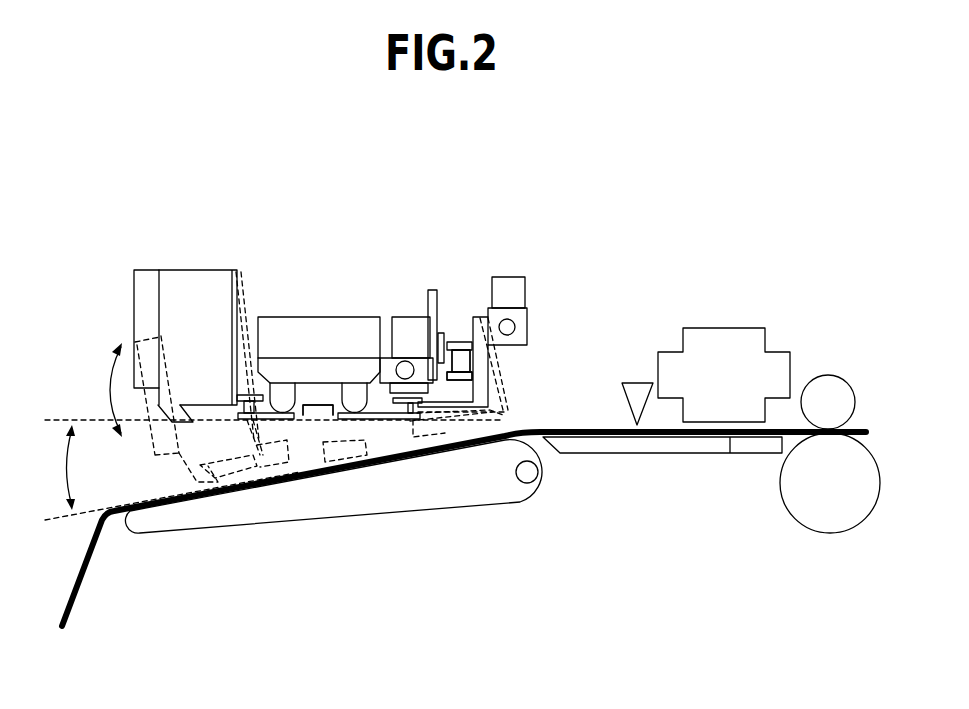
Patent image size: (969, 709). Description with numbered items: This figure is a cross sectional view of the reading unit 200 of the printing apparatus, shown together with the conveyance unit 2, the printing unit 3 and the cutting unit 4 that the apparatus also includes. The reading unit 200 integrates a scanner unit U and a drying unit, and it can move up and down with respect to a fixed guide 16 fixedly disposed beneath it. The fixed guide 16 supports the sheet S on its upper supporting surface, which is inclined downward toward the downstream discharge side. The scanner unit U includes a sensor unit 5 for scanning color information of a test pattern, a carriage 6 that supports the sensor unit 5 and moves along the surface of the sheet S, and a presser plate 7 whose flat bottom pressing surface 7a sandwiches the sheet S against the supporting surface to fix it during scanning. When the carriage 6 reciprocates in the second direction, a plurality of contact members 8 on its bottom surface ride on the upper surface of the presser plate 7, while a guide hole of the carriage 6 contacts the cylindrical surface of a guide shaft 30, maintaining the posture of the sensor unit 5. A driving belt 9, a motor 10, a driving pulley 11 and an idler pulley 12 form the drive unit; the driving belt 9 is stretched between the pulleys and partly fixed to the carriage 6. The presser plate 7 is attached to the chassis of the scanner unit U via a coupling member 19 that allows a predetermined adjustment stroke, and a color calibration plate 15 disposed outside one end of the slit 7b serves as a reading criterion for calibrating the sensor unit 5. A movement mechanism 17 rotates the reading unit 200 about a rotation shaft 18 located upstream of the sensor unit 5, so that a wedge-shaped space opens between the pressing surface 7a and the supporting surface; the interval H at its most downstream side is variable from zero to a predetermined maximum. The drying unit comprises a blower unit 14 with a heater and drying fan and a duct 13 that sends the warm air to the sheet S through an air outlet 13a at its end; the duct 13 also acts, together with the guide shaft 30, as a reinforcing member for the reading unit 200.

The reading unit 200 is at (115, 241).
The conveyance unit 2 is at (829, 383).
The printing unit 3 is at (724, 338).
The cutting unit 4 is at (638, 382).
The sensor unit 5 is at (301, 327).
The carriage 6 is at (287, 383).
The presser plate 7 is at (272, 420).
The pressing surface 7a is at (402, 420).
The slit 7b is at (306, 420).
The contact members 8 is at (284, 385).
The driving belt 9 is at (462, 342).
The motor 10 is at (414, 325).
The driving pulley 11 is at (467, 361).
The idler pulley 12 is at (459, 365).
The duct 13 is at (195, 278).
The air outlet 13a is at (172, 421).
The blower unit 14 is at (134, 308).
The color calibration plate 15 is at (324, 420).
The fixed guide 16 is at (331, 507).
The movement mechanism 17 is at (509, 290).
The rotation shaft 18 is at (515, 327).
The coupling member 19 is at (246, 392).
The guide shaft 30 is at (414, 370).
The scanner unit U is at (329, 285).
The sheet S is at (85, 560).
The interval H is at (56, 467).